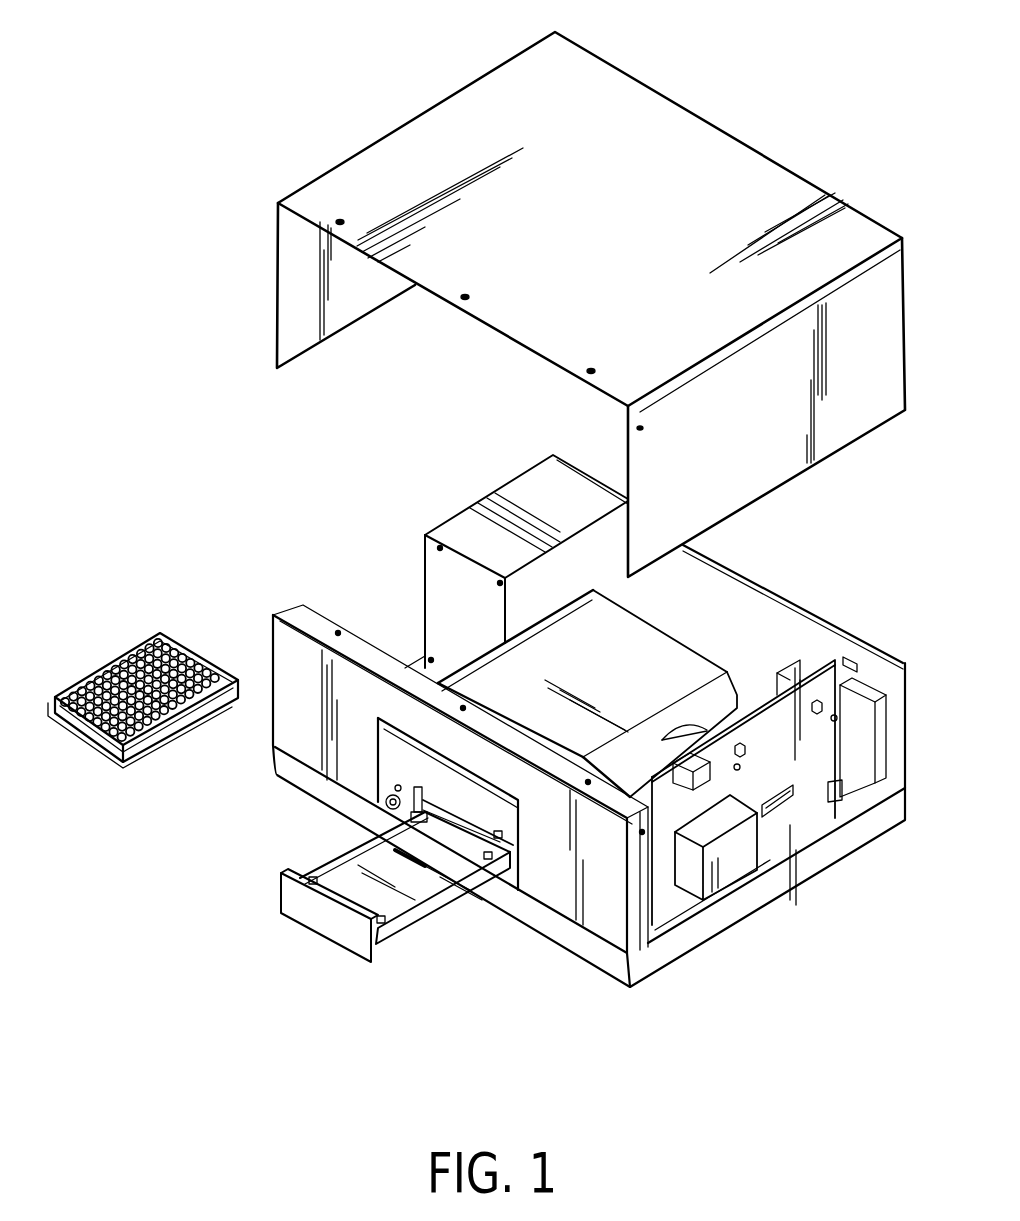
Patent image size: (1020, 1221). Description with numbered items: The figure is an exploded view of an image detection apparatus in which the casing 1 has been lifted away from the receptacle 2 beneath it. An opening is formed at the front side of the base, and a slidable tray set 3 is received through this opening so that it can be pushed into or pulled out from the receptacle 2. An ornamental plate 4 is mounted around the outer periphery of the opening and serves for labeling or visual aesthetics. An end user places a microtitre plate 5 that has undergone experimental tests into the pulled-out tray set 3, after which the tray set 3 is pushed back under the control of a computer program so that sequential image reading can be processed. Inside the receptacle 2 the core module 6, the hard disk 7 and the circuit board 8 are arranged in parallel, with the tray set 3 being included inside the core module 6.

The casing 1 is at (615, 100).
The receptacle 2 is at (612, 958).
The tray set 3 is at (378, 988).
The ornamental plate 4 is at (507, 820).
The microtitre plate 5 is at (153, 740).
The core module 6 is at (647, 655).
The hard disk 7 is at (703, 697).
The circuit board 8 is at (805, 810).